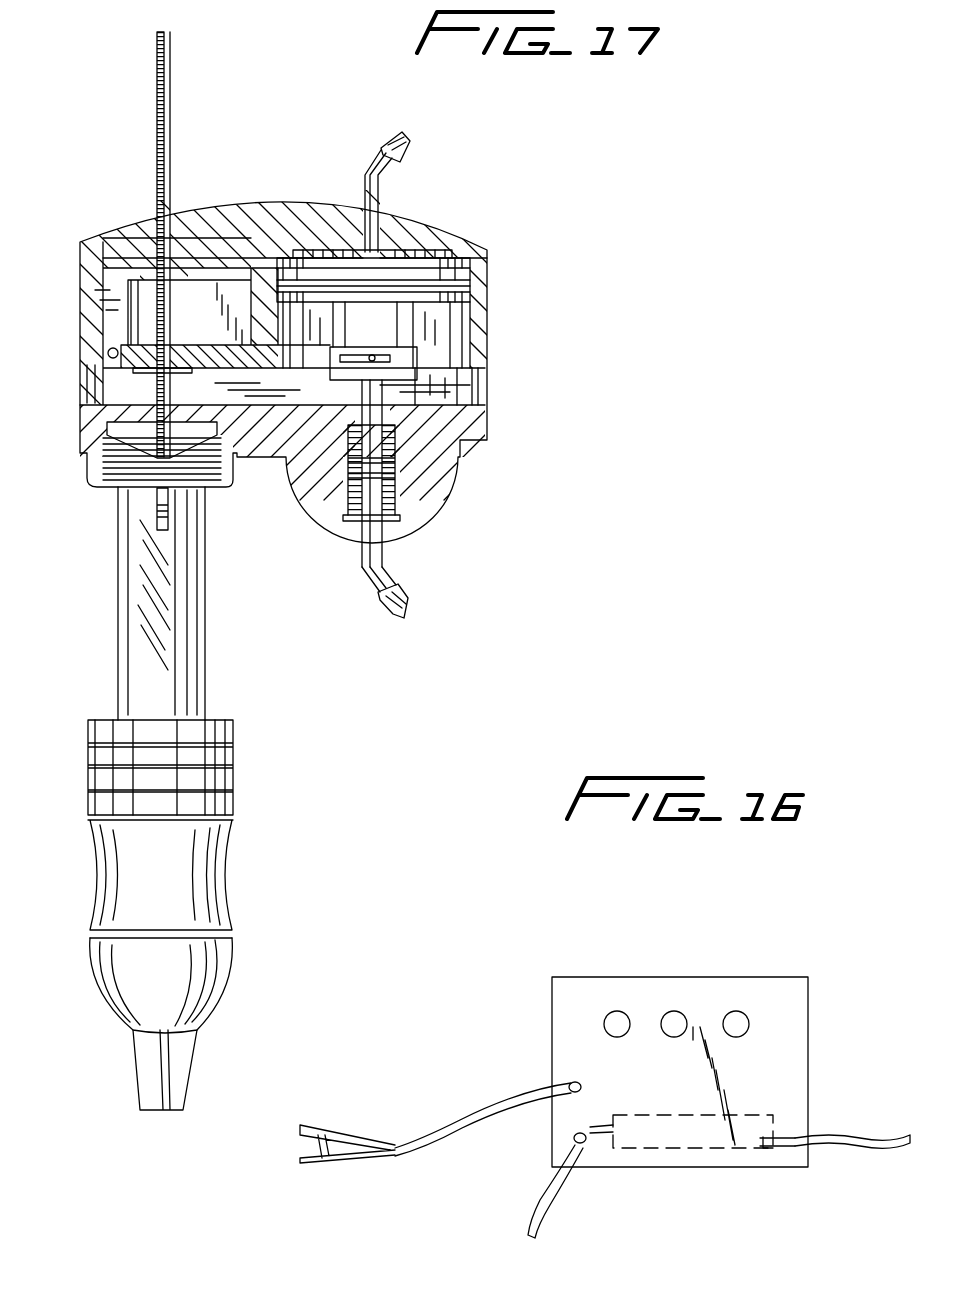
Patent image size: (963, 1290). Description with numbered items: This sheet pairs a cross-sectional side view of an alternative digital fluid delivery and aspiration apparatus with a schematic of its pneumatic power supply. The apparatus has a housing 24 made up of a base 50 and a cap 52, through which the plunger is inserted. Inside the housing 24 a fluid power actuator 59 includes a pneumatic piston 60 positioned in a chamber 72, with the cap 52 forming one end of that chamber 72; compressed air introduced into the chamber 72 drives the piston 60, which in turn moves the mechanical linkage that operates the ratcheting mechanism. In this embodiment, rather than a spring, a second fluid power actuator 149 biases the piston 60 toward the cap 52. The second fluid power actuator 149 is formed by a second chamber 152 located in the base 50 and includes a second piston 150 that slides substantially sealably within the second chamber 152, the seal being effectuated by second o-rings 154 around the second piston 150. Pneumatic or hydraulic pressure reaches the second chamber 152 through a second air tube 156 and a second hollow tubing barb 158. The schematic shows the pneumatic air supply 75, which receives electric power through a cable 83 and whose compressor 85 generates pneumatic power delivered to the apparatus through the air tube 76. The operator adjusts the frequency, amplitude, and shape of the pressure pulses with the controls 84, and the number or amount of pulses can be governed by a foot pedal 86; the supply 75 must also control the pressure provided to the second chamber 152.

In FIG. 17, the housing 24 is at (297, 198).
In FIG. 17, the base 50 is at (460, 440).
In FIG. 17, the cap 52 is at (447, 237).
In FIG. 17, the fluid power actuator 59 is at (406, 248).
In FIG. 17, the pneumatic piston 60 is at (452, 272).
In FIG. 17, the chamber 72 is at (452, 328).
In FIG. 17, the second fluid power actuator 149 is at (404, 500).
In FIG. 17, the second piston 150 is at (383, 535).
In FIG. 17, the second chamber 152 is at (398, 470).
In FIG. 17, the second o-rings 154 is at (350, 462).
In FIG. 17, the second air tube 156 is at (361, 568).
In FIG. 17, the second hollow tubing barb 158 is at (393, 618).
In FIG. 16, the pneumatic air supply 75 is at (587, 980).
In FIG. 16, the controls 84 is at (737, 1012).
In FIG. 16, the compressor 85 is at (695, 1147).
In FIG. 16, the cable 83 is at (880, 1140).
In FIG. 16, the air tube 76 is at (548, 1205).
In FIG. 16, the foot pedal 86 is at (355, 1135).